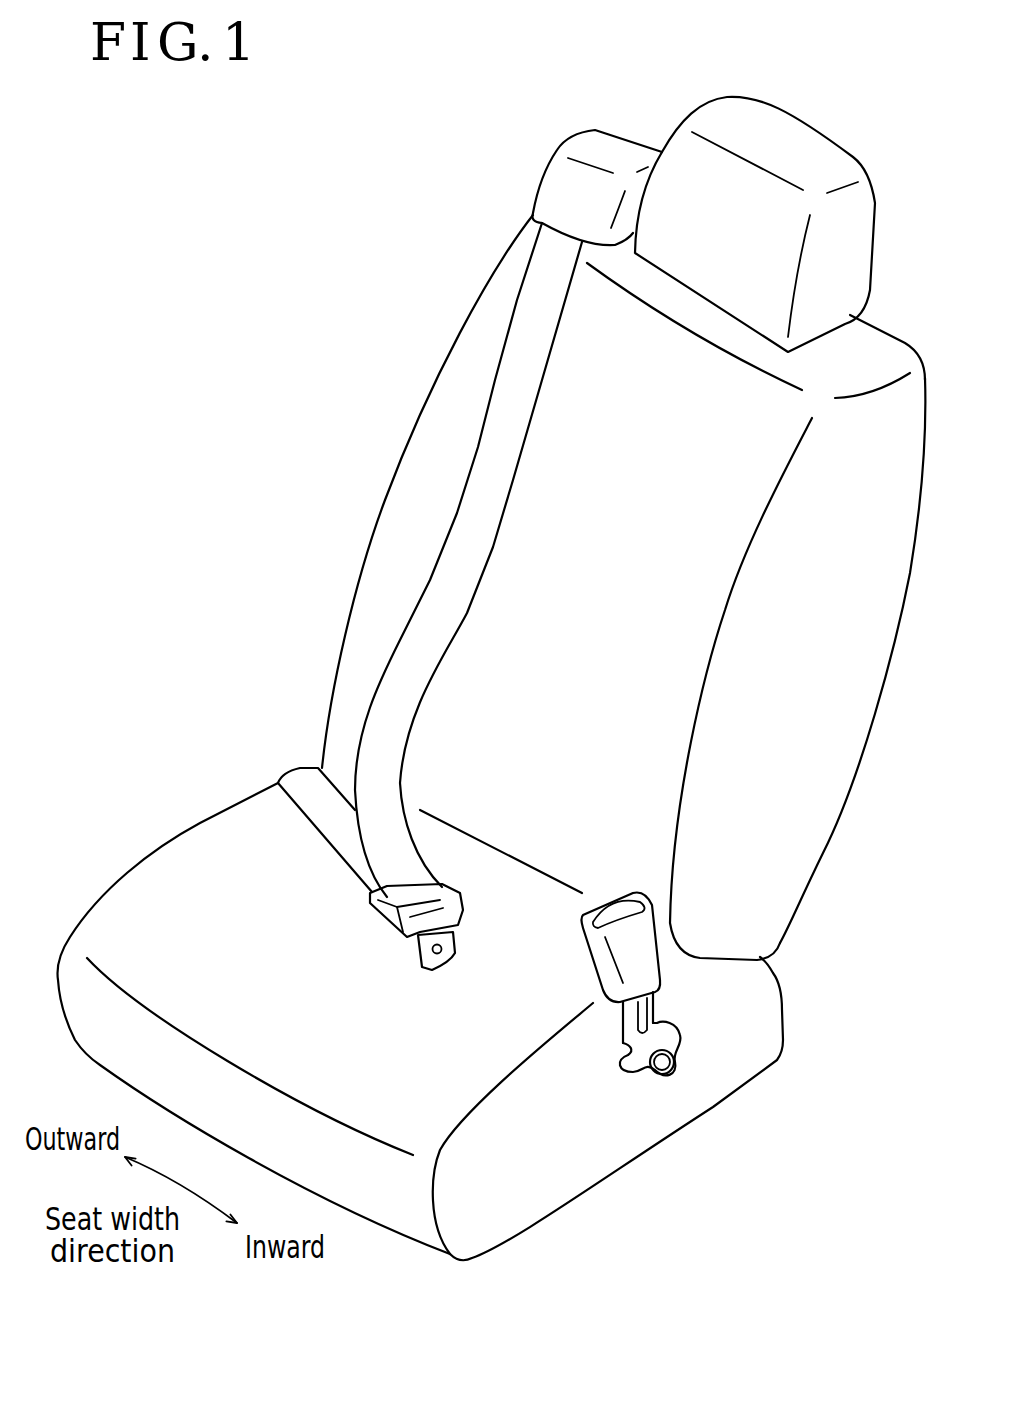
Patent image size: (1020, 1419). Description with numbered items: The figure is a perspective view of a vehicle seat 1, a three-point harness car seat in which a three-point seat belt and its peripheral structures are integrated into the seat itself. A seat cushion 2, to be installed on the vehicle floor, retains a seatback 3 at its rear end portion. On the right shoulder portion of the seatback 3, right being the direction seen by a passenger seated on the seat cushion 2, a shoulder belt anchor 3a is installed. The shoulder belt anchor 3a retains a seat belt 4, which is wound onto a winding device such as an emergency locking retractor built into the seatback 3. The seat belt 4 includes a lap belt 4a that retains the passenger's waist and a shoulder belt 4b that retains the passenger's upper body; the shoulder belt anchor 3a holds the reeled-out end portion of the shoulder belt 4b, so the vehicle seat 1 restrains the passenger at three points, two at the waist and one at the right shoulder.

The vehicle seat 1 is at (300, 387).
The seat cushion 2 is at (173, 857).
The seatback 3 is at (472, 337).
The shoulder belt anchor 3a is at (552, 181).
The seat belt 4 is at (340, 817).
The lap belt 4a is at (298, 780).
The shoulder belt 4b is at (370, 707).